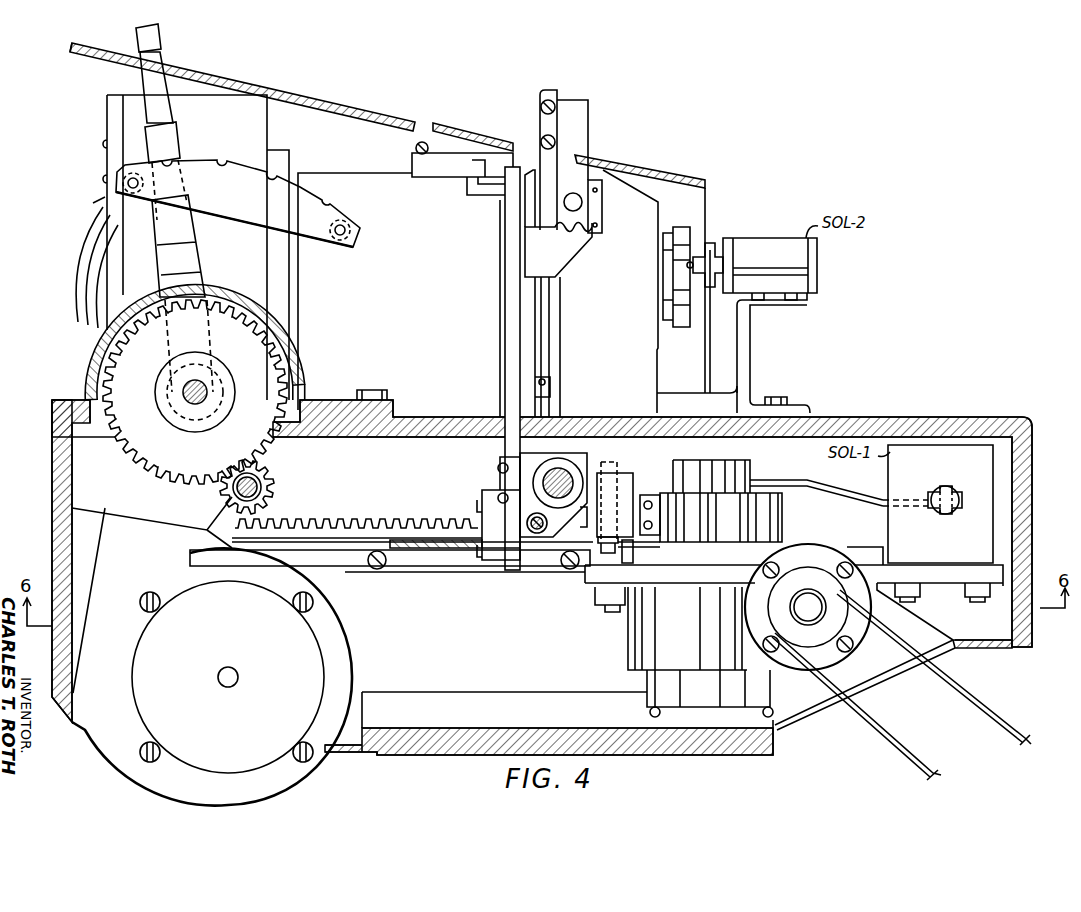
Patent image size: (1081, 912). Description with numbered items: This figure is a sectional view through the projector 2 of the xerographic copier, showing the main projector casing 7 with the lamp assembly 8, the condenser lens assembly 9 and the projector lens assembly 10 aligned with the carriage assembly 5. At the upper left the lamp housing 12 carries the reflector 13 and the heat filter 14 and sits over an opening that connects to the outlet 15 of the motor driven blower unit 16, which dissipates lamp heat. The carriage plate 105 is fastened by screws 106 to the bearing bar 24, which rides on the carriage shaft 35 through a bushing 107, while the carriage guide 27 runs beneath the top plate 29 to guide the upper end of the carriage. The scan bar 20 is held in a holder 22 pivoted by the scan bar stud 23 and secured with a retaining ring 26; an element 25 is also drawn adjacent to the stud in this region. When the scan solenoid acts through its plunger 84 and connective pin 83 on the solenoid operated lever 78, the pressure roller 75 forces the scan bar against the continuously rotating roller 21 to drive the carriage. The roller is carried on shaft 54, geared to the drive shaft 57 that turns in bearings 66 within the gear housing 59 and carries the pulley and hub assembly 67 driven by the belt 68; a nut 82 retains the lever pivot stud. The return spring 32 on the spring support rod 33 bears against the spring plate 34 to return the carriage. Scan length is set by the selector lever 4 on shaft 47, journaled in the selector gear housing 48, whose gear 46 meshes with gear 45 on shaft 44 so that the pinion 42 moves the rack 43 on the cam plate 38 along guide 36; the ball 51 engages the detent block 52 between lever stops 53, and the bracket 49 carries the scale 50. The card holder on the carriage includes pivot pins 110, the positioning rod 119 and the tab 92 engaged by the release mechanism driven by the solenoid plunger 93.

The projector 2 is at (278, 80).
The selector lever 4 is at (160, 38).
The carriage assembly 5 is at (578, 104).
The main projector casing 7 is at (53, 462).
The lamp assembly 8 is at (96, 122).
The condenser lens assembly 9 is at (316, 170).
The projector lens assembly 10 is at (710, 226).
The lamp housing 12 is at (132, 92).
The reflector 13 is at (90, 236).
The heat filter 14 is at (289, 262).
The blower outlet 15 is at (103, 510).
The motor driven blower unit 16 is at (338, 644).
The scan bar 20 is at (656, 512).
The roller 21 is at (780, 518).
The holder 22 is at (632, 476).
The scan bar stud 23 is at (626, 546).
The bearing bar 24 is at (596, 466).
The shaft 25 is at (645, 542).
The retaining ring 26 is at (604, 546).
The carriage guide 27 is at (496, 200).
The top plate 29 is at (412, 156).
The return spring 32 is at (520, 542).
The spring support rod 33 is at (527, 522).
The spring plate 34 is at (520, 508).
The carriage shaft 35 is at (556, 468).
The guide 36 is at (436, 570).
The cam plate 38 is at (412, 532).
The pinion 42 is at (270, 468).
The rack 43 is at (342, 520).
The shaft 44 is at (236, 488).
The gear 45 is at (276, 490).
The gear 46 is at (170, 480).
The shaft 47 is at (208, 392).
The selector gear housing 48 is at (300, 378).
The bracket 49 is at (78, 53).
The scale 50 is at (200, 60).
The ball 51 is at (170, 166).
The detent block 52 is at (338, 226).
The lever stops 53 is at (133, 192).
The shaft 54 is at (710, 460).
The drive shaft 57 is at (812, 598).
The gear housing 59 is at (628, 638).
The bearings 66 is at (876, 548).
The pulley and hub assembly 67 is at (772, 612).
The belt 68 is at (964, 698).
The pressure roller 75 is at (548, 522).
The solenoid operated lever 78 is at (838, 494).
The nut 82 is at (594, 592).
The connective pin 83 is at (944, 490).
The plunger 84 is at (950, 508).
The tab 92 is at (590, 222).
The solenoid plunger 93 is at (710, 245).
The carriage plate 105 is at (505, 266).
The screws 106 is at (500, 492).
The bushing 107 is at (558, 464).
The pivot pins 110 is at (544, 380).
The positioning rod 119 is at (582, 204).